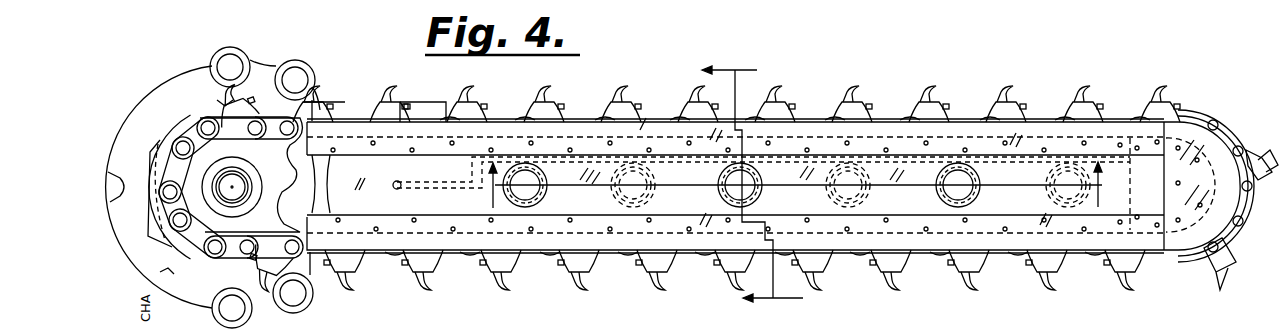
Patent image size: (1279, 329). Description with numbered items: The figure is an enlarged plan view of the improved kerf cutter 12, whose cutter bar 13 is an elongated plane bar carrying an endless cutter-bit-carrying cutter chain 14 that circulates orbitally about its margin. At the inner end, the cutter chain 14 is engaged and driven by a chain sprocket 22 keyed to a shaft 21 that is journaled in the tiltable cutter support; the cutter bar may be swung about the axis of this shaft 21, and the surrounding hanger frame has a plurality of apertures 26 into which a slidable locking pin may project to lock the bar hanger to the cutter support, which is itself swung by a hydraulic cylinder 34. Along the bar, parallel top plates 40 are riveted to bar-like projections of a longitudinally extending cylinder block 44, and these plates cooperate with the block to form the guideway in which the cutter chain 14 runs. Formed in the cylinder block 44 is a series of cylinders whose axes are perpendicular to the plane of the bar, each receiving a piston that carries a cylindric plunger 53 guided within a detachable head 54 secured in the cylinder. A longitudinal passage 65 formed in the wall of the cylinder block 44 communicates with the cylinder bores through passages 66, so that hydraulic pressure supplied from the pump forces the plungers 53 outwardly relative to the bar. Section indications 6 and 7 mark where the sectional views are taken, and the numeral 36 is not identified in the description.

The section line 6- 6 is at (752, 185).
The section line 7- 7 is at (796, 187).
The kerf cutter 12 is at (392, 227).
The cutter bar 13 is at (798, 137).
The cutter chain 14 is at (1018, 100).
The shaft 21 is at (228, 188).
The chain sprocket 22 is at (262, 212).
The apertures 26 is at (236, 62).
The hydraulic cylinder 34 is at (764, 10).
The housing portion 36 is at (166, 5).
The top plates 40 is at (650, 130).
The cylinder block 44 is at (546, 212).
The plunger 53 is at (517, 172).
The detachable head 54 is at (545, 196).
The longitudinal passage 65 is at (406, 190).
The passages 66 is at (1092, 153).